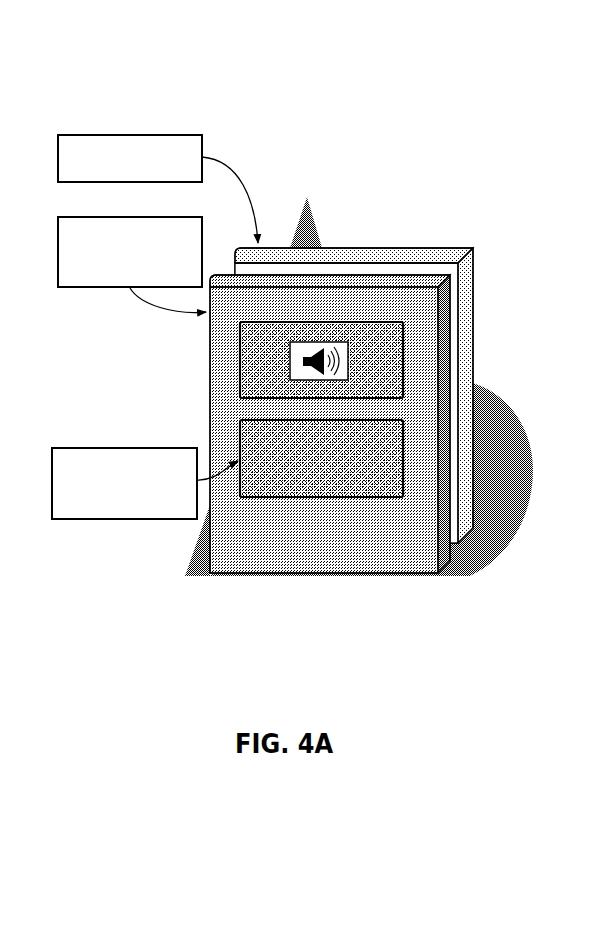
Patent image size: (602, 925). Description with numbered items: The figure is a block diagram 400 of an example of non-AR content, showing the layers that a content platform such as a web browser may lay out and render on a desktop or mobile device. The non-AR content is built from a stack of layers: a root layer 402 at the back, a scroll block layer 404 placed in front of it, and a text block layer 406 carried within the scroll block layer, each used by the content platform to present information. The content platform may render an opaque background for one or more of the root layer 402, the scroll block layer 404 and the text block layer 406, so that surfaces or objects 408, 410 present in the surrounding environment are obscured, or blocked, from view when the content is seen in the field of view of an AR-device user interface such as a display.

The block diagram 400 is at (162, 70).
The root layer 402 is at (399, 246).
The scroll block layer 404 is at (330, 424).
The text block layer 406 is at (324, 500).
The surface or object 408 is at (513, 536).
The surface or object 410 is at (318, 221).